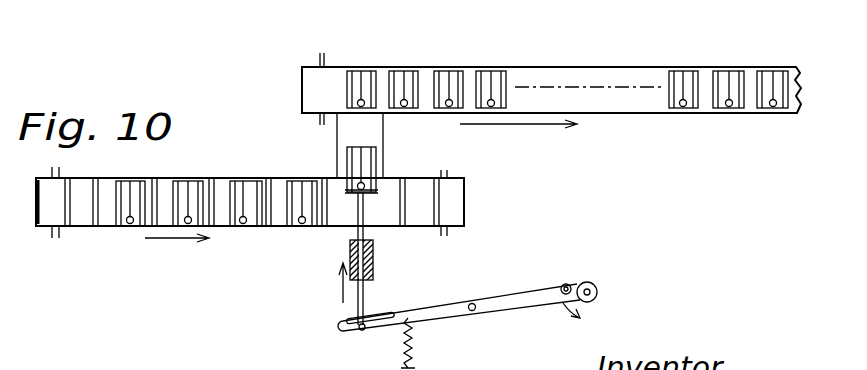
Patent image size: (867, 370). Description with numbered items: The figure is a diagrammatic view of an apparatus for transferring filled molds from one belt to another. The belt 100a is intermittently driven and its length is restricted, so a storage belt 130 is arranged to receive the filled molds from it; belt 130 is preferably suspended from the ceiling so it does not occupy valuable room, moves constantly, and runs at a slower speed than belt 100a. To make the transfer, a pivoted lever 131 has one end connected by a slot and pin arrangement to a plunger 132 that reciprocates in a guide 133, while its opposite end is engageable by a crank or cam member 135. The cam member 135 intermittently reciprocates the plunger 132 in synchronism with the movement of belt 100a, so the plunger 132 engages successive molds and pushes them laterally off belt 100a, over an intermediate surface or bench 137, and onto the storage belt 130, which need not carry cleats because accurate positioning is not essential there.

The storage belt 130 is at (645, 67).
The belt 100a is at (102, 226).
The intermediate surface or bench 137 is at (337, 143).
The plunger 132 is at (365, 297).
The guide 133 is at (373, 252).
The pivoted lever 131 is at (507, 298).
The crank or cam member 135 is at (590, 282).